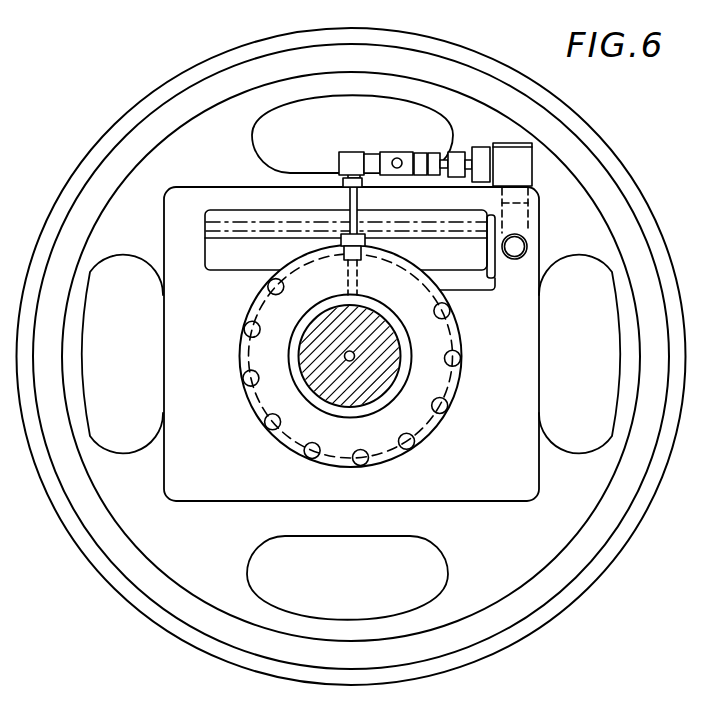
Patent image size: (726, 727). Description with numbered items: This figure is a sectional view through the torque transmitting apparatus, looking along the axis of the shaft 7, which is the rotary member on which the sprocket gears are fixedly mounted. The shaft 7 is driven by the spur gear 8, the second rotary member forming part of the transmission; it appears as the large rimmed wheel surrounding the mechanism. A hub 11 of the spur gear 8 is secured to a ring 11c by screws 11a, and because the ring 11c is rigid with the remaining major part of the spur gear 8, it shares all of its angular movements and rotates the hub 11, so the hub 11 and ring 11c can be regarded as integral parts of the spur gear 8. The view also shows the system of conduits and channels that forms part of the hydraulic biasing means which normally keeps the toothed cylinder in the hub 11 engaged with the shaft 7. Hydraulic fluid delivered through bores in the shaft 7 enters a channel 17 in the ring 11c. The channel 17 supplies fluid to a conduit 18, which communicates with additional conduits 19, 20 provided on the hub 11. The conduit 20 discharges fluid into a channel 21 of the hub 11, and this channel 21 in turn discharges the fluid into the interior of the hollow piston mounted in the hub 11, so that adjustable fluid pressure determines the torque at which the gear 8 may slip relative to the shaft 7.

The shaft 7 is at (350, 361).
The spur gear 8 is at (590, 170).
The hub 11 is at (195, 498).
The screws 11a is at (436, 404).
The ring 11c is at (424, 328).
The channel 17 is at (348, 283).
The conduit 18 is at (350, 200).
The conduit 19 is at (406, 160).
The conduit 20 is at (513, 163).
The channel 21 is at (526, 239).